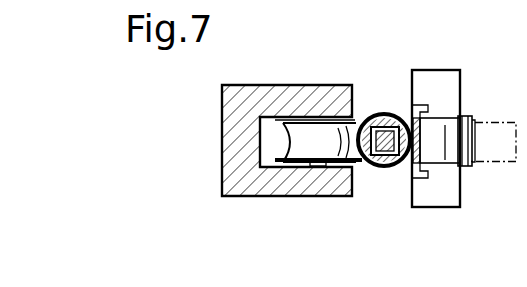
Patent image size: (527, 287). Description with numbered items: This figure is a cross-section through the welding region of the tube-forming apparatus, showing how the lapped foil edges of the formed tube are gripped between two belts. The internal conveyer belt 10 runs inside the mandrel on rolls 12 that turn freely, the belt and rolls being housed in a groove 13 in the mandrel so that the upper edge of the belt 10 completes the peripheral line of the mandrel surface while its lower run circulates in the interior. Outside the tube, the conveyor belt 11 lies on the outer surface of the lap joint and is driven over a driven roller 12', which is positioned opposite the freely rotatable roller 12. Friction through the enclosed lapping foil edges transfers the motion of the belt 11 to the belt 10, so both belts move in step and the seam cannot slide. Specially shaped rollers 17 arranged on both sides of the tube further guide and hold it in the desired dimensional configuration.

The specially shaped rollers 17 is at (292, 141).
The conveyer belt 10 is at (373, 168).
The rolls 12 is at (384, 110).
The groove 13 is at (393, 167).
The driven roller 12' is at (465, 115).
The conveyor belt 11 is at (506, 148).